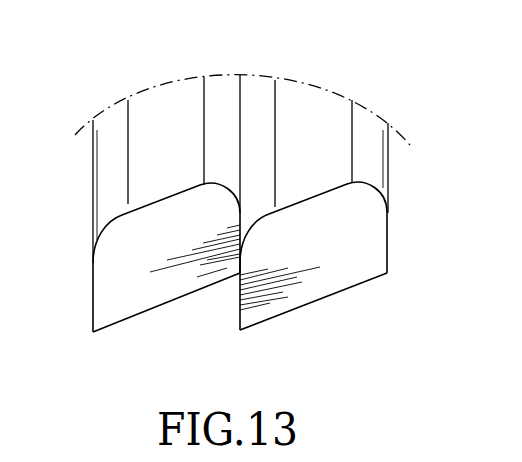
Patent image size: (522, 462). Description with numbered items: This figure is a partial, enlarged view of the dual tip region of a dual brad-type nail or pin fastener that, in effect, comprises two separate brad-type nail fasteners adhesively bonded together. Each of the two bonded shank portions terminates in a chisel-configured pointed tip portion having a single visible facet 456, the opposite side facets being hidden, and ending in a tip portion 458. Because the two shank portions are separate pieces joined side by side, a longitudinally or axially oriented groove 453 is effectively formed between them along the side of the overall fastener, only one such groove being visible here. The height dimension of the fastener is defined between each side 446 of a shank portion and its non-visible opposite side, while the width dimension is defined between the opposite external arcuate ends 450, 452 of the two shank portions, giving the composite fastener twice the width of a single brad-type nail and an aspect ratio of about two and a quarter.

The side of fastener shank portion 446 is at (162, 110).
The external arcuate end 450 is at (98, 205).
The external arcuate end 452 is at (223, 93).
The longitudinally oriented groove 453 is at (240, 143).
The single facet 456 is at (138, 285).
The tip portion 458 is at (167, 305).